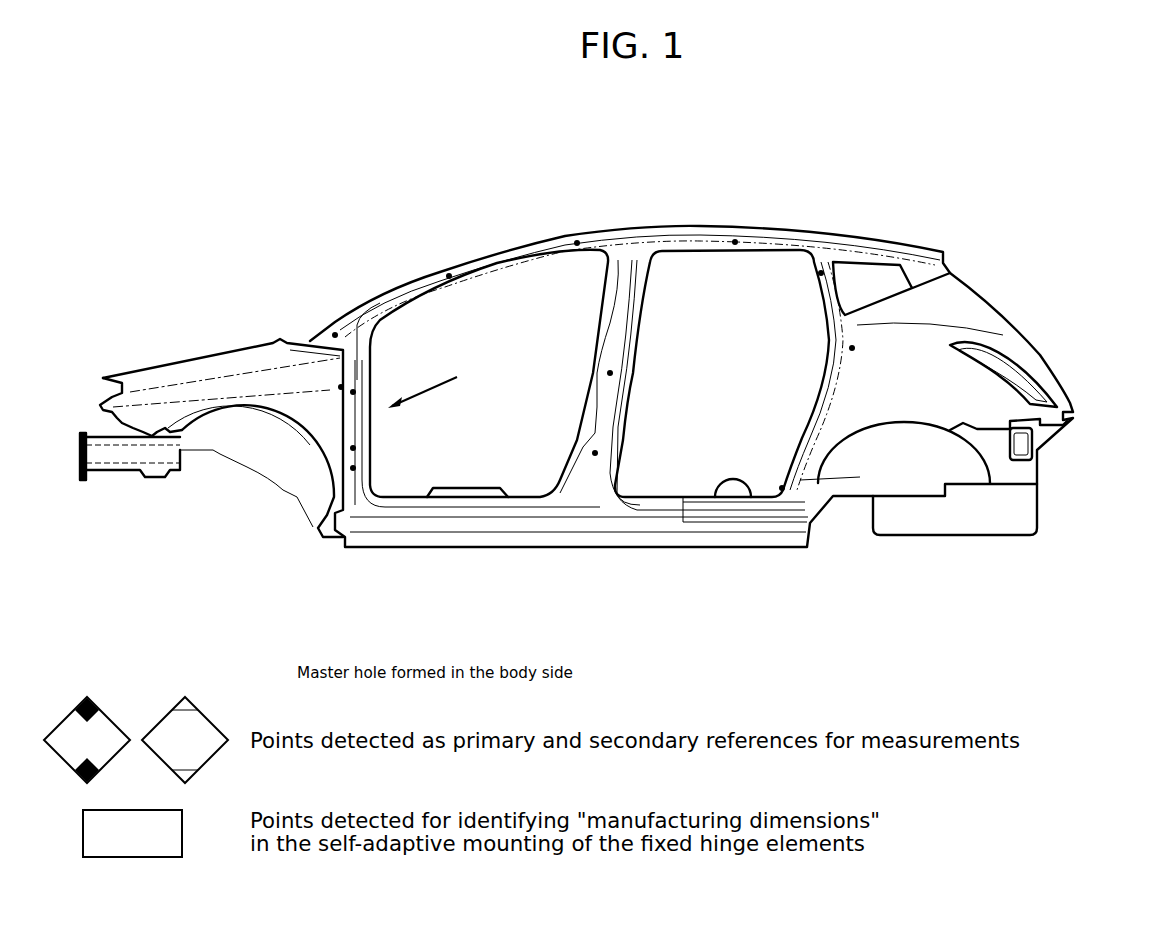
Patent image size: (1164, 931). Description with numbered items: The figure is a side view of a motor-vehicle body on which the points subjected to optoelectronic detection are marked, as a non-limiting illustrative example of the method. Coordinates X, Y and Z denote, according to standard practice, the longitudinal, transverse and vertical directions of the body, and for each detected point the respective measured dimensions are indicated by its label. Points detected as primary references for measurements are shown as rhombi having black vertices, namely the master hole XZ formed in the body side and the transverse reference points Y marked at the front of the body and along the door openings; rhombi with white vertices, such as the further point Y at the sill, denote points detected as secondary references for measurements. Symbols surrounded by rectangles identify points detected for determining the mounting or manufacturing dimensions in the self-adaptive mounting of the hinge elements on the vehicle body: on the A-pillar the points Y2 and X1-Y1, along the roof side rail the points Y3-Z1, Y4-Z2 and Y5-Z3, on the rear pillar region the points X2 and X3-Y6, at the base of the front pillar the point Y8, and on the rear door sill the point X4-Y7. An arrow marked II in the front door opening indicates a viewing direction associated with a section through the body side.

The measurement reference point Y2 on A-pillar Y2 is at (335, 335).
The measurement reference point Y3-Z1 on roof side rail Y3-Z1 is at (449, 276).
The measurement reference point Y4-Z2 on roof side rail Y4-Z2 is at (577, 243).
The measurement reference point Y5-Z3 on roof side rail Y5-Z3 is at (735, 242).
The manufacturing dimension point X2 on C-pillar X2 is at (821, 273).
The manufacturing dimension point X1-Y1 on A-pillar X1-Y1 is at (341, 387).
The manufacturing dimension point X3-Y6 on rear quarter X3-Y6 is at (852, 348).
The manufacturing dimension point Y8 on A-pillar base Y8 is at (353, 468).
The manufacturing dimension point X4-Y7 on rear door sill X4-Y7 is at (782, 488).
The master hole formed in the body side (primary reference) XZ is at (353, 448).
The primary and secondary reference points Y is at (810, 572).
The section view direction indicator II is at (422, 382).